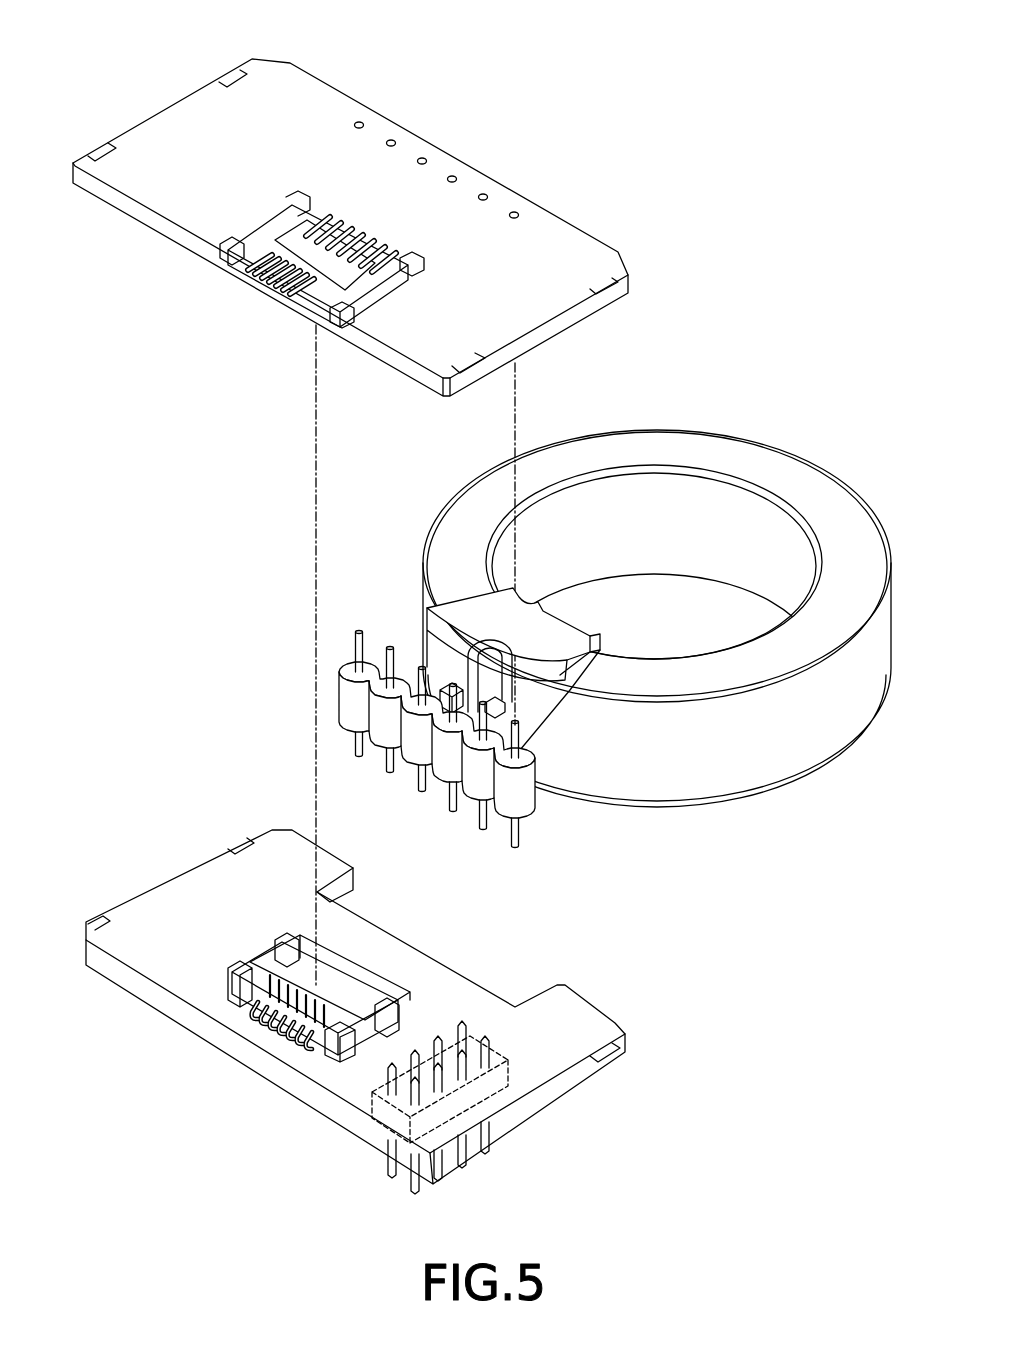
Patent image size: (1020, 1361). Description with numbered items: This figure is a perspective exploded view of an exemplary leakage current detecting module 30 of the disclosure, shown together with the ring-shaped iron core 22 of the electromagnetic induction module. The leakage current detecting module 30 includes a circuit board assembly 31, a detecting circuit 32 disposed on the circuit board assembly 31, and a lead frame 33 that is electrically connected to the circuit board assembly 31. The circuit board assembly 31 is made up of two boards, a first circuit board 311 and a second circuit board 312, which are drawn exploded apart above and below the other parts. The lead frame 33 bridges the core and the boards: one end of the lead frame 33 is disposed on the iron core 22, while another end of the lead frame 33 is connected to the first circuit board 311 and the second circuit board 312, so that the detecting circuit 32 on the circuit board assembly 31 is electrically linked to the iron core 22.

The leakage current detecting module 30 is at (146, 84).
The circuit board assembly 31 is at (55, 347).
The first circuit board 311 is at (153, 898).
The second circuit board 312 is at (183, 237).
The detecting circuit 32 is at (337, 985).
The lead frame 33 is at (473, 617).
The iron core 22 is at (830, 720).